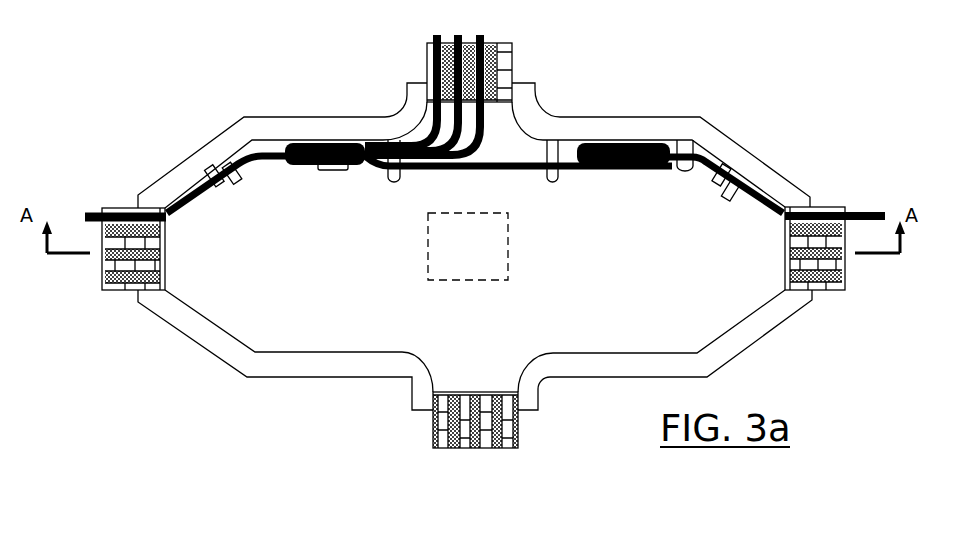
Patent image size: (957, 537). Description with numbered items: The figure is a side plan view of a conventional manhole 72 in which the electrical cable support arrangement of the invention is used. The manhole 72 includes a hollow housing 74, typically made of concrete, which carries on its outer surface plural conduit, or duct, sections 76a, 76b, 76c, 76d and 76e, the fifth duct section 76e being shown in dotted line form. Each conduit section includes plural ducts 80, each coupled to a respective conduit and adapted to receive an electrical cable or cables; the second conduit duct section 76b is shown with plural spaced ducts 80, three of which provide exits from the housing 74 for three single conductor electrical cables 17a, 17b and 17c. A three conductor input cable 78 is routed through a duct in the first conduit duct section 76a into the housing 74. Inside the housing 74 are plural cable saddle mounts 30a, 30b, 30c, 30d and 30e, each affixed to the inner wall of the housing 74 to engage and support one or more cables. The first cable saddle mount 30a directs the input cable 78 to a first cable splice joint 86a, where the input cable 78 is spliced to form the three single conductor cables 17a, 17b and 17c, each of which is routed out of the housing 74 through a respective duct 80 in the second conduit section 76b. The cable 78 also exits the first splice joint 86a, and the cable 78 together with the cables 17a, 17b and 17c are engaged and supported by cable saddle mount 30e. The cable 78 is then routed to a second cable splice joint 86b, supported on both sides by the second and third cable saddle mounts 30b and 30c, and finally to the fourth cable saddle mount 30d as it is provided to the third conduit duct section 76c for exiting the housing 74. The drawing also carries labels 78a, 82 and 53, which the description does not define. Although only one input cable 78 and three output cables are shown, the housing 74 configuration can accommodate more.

The manhole 72 is at (465, 252).
The housing 74 is at (296, 378).
The first conduit duct section 76a is at (112, 292).
The second conduit duct section 76b is at (513, 77).
The third conduit duct section 76c is at (823, 291).
The conduit duct section 76d is at (517, 428).
The fifth conduit duct section 76e is at (508, 267).
The three conductor input cable 78 is at (90, 212).
The right cable 78a is at (847, 207).
The duct 80 is at (503, 58).
The splice holder 82 is at (330, 171).
The first cable splice joint 86a is at (298, 147).
The second cable splice joint 86b is at (645, 150).
The single conductor electrical cable 17a is at (430, 146).
The single conductor electrical cable 17b is at (440, 133).
The single conductor electrical cable 17c is at (540, 110).
The first cable saddle mount 30a is at (240, 180).
The second cable saddle mount 30b is at (558, 180).
The third cable saddle mount 30c is at (680, 172).
The fourth cable saddle mount 30d is at (720, 189).
The cable saddle mount 30e is at (397, 181).
The fiber cable 53 is at (452, 172).